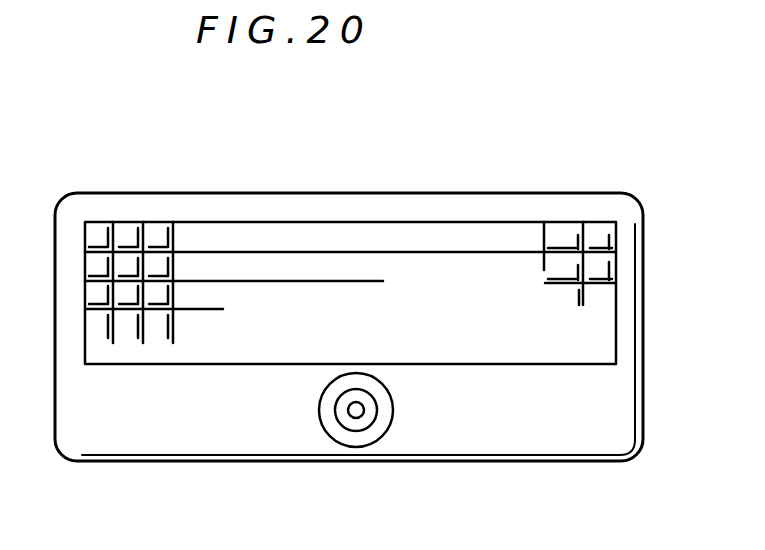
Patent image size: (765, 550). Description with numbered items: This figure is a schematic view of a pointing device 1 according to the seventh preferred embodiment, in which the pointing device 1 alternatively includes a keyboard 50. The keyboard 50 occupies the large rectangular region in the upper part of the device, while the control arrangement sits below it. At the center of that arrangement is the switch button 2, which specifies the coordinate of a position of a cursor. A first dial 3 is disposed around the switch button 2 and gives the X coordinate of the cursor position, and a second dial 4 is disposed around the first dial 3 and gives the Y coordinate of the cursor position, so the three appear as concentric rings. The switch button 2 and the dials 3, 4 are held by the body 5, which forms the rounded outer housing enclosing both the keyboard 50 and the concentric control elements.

The pointing device 1 is at (129, 178).
The switch button 2 is at (348, 413).
The first dial 3 is at (374, 405).
The second dial 4 is at (386, 418).
The body 5 is at (604, 427).
The keyboard 50 is at (487, 345).